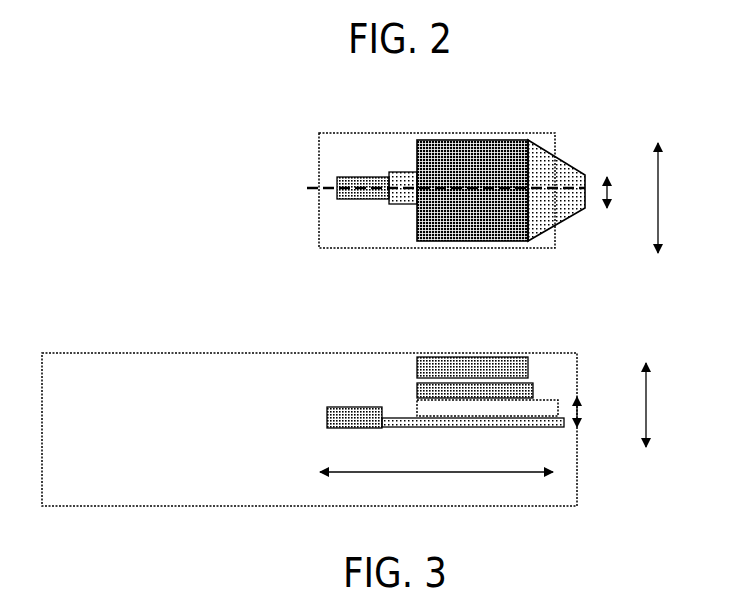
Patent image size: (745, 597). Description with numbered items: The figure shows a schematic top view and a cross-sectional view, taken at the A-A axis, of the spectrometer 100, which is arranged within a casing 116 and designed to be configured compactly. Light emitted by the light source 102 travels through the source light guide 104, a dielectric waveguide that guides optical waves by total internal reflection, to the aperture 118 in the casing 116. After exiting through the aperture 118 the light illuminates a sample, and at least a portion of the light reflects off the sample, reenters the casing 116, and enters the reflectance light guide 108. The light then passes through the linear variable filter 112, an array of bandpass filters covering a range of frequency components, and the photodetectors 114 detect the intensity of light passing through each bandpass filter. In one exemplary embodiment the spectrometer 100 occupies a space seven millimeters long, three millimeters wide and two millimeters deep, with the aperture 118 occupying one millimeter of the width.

In FIG. 2, the spectrometer 100 is at (310, 92).
In FIG. 3, the spectrometer 100 is at (147, 327).
In FIG. 2, the light source 102 is at (345, 198).
In FIG. 3, the light source 102 is at (332, 402).
In FIG. 2, the source light guide 104 is at (403, 207).
In FIG. 3, the source light guide 104 is at (407, 420).
In FIG. 2, the reflectance light guide 108 is at (564, 247).
In FIG. 3, the reflectance light guide 108 is at (557, 400).
In FIG. 3, the linear variable filter 112 is at (535, 383).
In FIG. 2, the photodetectors 114 is at (480, 212).
In FIG. 3, the photodetectors 114 is at (488, 355).
In FIG. 2, the casing 116 is at (503, 132).
In FIG. 3, the casing 116 is at (143, 507).
In FIG. 2, the aperture 118 is at (585, 188).
In FIG. 3, the aperture 118 is at (578, 412).